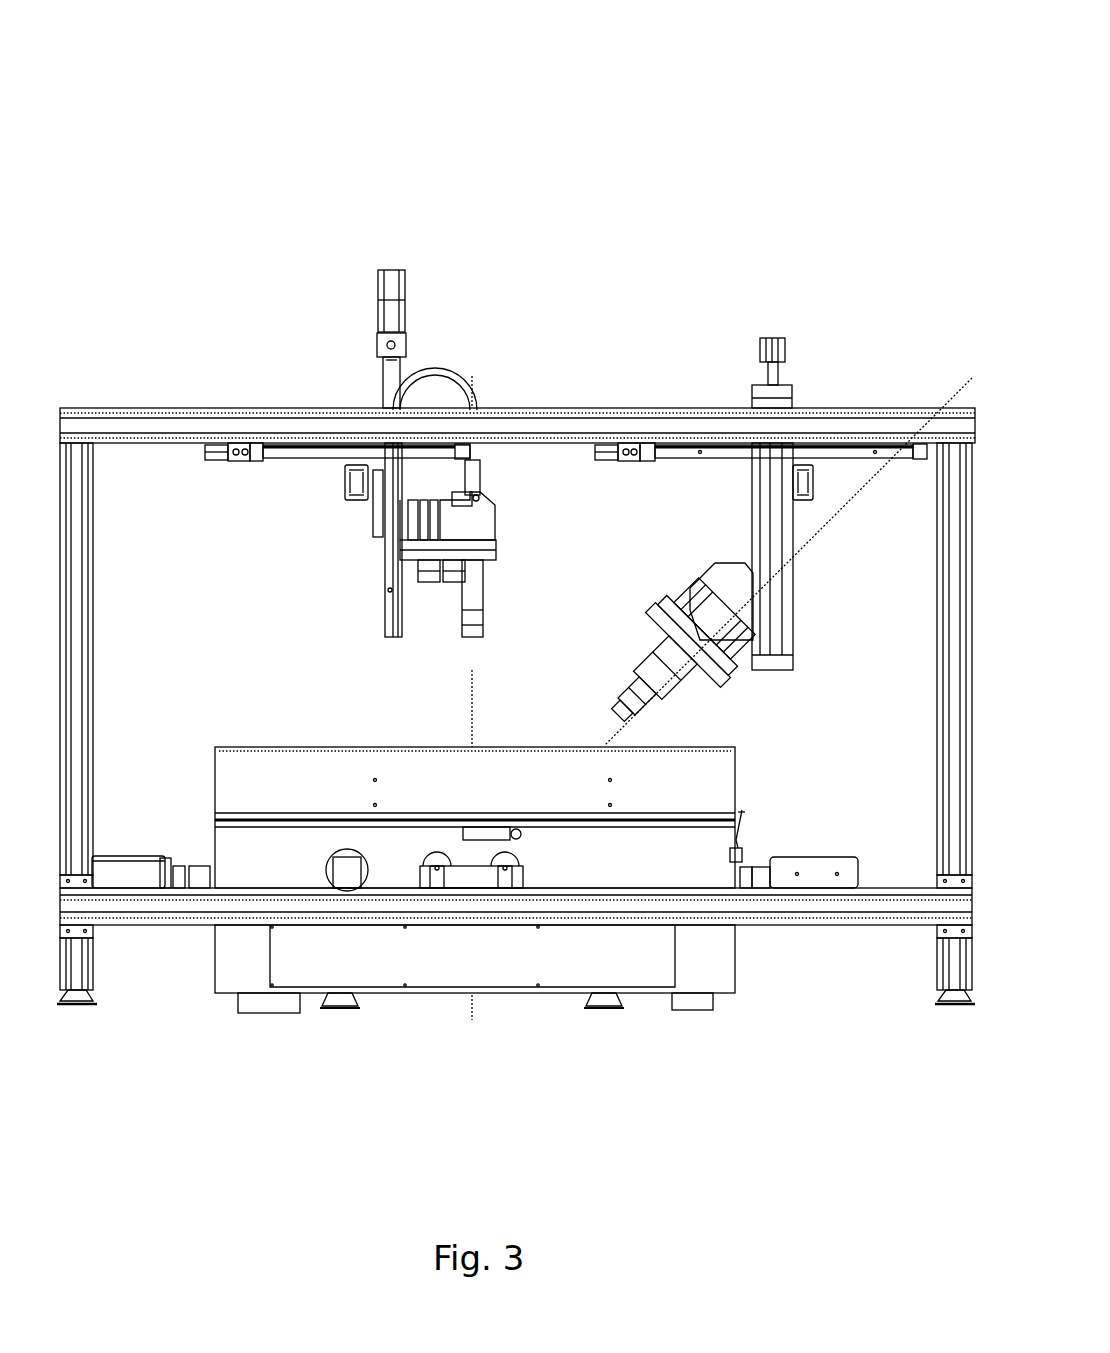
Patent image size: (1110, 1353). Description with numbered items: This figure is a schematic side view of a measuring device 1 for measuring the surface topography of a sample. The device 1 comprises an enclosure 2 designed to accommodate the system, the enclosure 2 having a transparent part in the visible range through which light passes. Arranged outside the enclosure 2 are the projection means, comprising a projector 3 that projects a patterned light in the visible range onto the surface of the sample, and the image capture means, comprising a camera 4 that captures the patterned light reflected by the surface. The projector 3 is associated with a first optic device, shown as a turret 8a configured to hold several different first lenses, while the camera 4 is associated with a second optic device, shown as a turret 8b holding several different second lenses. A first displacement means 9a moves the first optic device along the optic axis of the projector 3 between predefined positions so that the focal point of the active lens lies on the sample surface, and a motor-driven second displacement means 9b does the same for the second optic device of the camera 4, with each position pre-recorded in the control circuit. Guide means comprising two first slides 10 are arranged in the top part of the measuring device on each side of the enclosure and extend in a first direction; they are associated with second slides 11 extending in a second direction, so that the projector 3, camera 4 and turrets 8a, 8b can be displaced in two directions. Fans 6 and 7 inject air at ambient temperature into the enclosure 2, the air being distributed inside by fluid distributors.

The measuring device 1 is at (318, 152).
The enclosure 2 is at (697, 862).
The projector 3 is at (697, 620).
The camera 4 is at (492, 530).
The fan 6 is at (108, 873).
The fan 7 is at (808, 873).
The turret of the first optic device 8a is at (650, 707).
The turret of the second optic device 8b is at (472, 592).
The first displacement means 9a is at (768, 542).
The second displacement means 9b is at (388, 560).
The first slides 10 is at (277, 450).
The second slides 11 is at (352, 485).